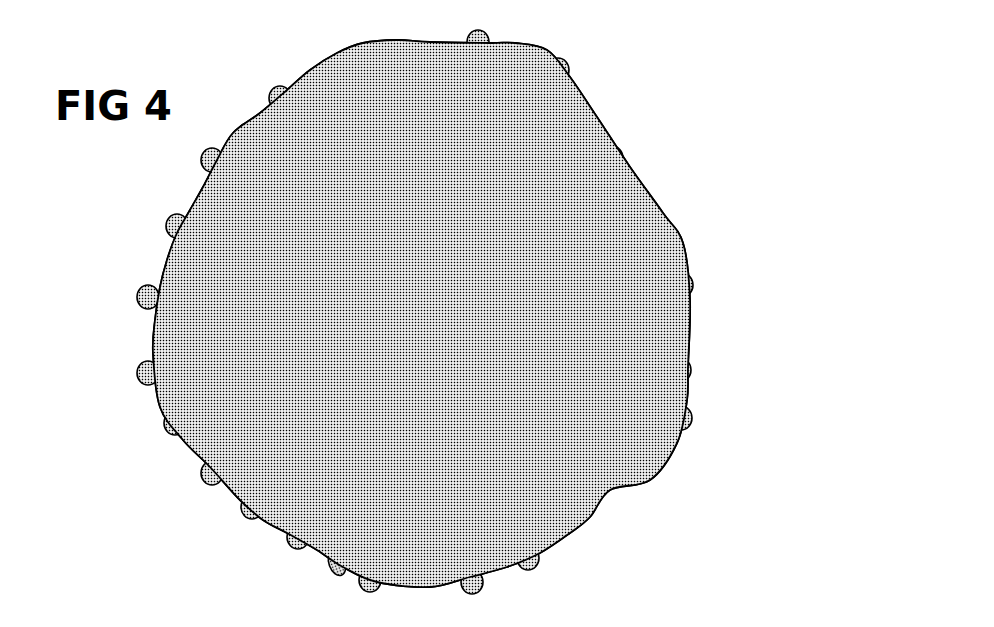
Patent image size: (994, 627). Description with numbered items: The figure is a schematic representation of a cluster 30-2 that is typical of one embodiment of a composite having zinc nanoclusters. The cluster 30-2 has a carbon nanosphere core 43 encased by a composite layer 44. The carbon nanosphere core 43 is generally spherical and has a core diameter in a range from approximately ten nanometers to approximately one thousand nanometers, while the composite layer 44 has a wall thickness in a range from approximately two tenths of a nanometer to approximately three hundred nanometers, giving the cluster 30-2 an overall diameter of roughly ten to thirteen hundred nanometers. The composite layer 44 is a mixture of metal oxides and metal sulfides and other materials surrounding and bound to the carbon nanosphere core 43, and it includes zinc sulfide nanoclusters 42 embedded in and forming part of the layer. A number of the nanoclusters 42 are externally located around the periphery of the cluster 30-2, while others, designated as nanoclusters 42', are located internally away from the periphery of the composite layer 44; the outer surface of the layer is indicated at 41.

The cluster 30-2 is at (465, 300).
The outer coating layer 41 is at (655, 447).
The zinc sulfide nanoclusters 42 is at (374, 300).
The nanoclusters 42' is at (436, 232).
The carbon nanosphere core 43 is at (320, 285).
The composite layer 44 is at (227, 493).